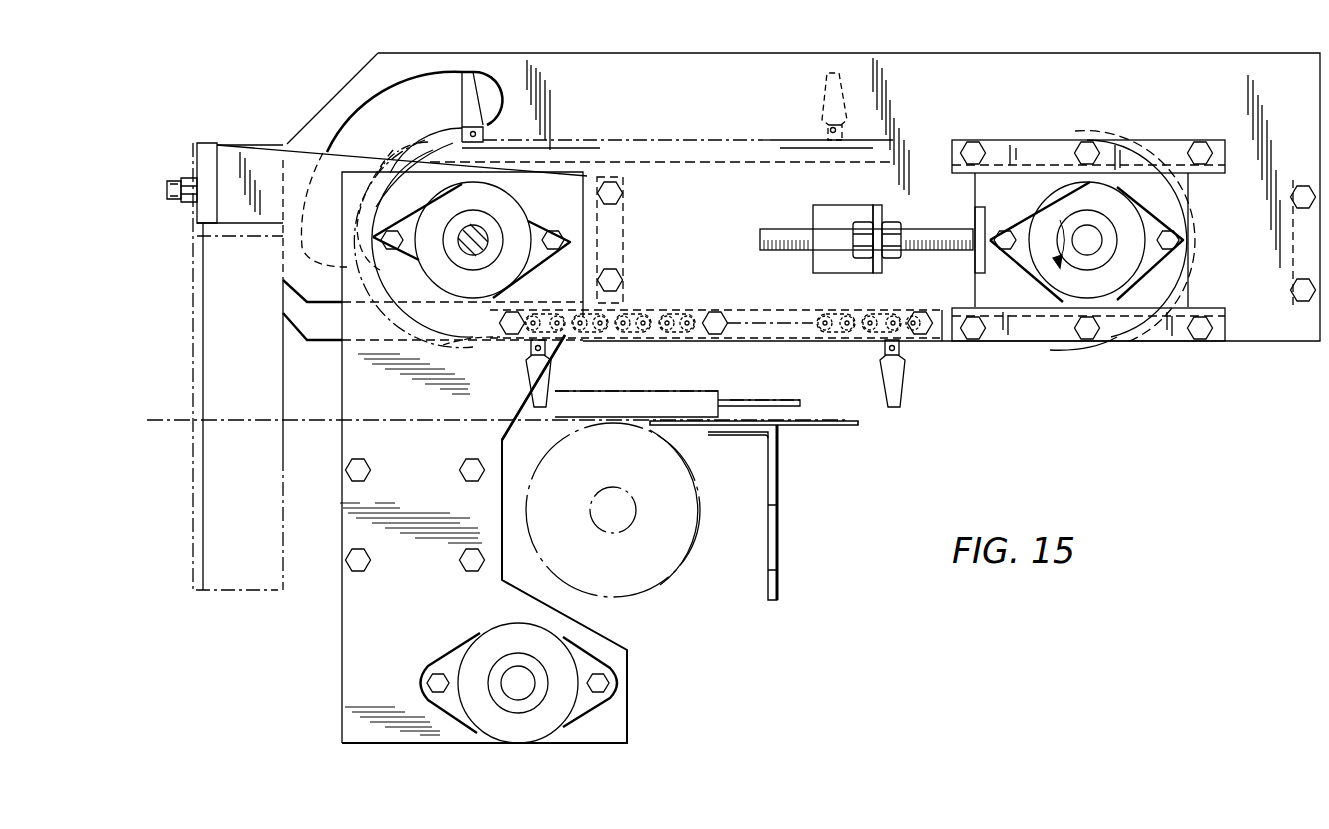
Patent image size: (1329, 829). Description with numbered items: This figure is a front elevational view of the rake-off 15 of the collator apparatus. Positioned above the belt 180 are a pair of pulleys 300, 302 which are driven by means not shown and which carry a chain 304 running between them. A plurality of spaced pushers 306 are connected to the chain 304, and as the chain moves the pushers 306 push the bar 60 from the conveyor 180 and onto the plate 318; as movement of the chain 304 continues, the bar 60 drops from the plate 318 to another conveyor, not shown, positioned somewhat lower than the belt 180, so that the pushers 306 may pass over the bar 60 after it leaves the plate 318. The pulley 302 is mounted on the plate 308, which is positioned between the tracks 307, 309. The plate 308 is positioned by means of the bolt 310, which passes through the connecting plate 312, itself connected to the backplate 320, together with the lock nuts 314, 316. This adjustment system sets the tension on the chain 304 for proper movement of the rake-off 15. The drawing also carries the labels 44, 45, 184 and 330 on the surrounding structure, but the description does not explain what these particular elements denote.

The rake-off 15 is at (832, 476).
The guide bar 44 is at (790, 404).
The guide slot 45 is at (652, 397).
The bar 60 is at (737, 392).
The belt 180 is at (424, 418).
The roller 184 is at (690, 535).
The pulley 300 is at (515, 205).
The pulley 302 is at (1055, 205).
The chain 304 is at (680, 318).
The pushers 306 is at (823, 87).
The track 307 is at (1157, 338).
The plate 308 is at (983, 286).
The track 309 is at (1147, 143).
The bolt 310 is at (932, 235).
The connecting plate 312 is at (820, 215).
The lock nut 314 is at (862, 258).
The lock nut 316 is at (900, 258).
The plate 318 is at (773, 477).
The backplate 320 is at (709, 219).
The mounting plate 330 is at (1089, 62).